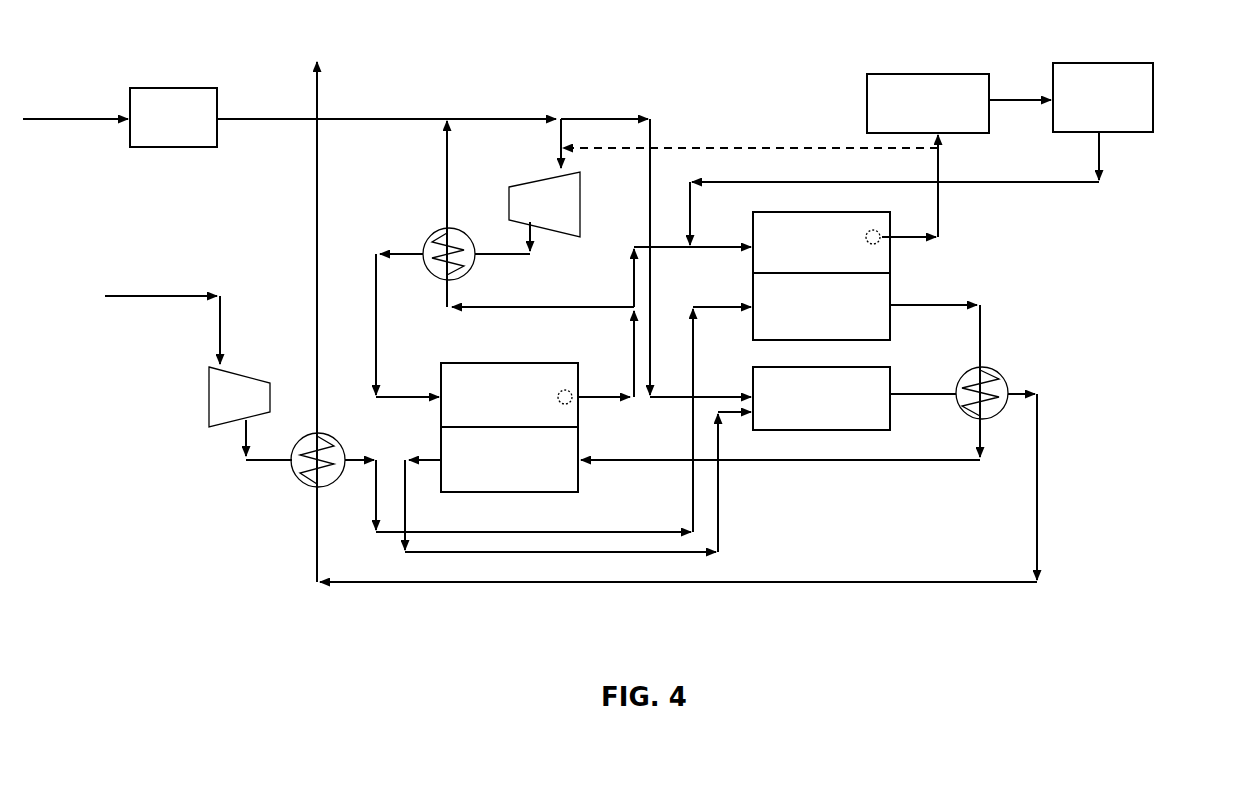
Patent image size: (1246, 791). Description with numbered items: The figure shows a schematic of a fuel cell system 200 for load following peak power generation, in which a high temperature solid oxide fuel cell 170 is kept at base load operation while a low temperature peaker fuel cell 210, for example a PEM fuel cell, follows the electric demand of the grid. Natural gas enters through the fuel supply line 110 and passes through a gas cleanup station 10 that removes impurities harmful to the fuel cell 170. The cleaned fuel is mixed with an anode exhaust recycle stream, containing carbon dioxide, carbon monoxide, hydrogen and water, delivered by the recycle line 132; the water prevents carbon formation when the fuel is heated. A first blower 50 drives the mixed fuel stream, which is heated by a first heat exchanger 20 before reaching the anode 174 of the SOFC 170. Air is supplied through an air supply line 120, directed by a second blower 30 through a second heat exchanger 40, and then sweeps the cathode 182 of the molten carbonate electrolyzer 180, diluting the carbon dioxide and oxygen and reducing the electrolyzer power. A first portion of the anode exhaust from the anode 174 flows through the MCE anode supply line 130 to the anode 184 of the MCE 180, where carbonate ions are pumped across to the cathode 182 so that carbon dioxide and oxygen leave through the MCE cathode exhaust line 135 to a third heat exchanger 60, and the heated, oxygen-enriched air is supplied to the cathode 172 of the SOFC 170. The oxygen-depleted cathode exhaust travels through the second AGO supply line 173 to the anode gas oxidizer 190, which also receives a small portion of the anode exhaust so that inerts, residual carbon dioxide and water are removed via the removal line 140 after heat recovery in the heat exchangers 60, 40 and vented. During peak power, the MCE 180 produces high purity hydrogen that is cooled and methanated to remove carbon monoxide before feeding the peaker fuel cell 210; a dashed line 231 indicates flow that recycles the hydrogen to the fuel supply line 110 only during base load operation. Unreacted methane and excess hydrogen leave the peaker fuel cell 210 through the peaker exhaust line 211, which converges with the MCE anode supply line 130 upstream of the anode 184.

The fuel cell system 200 is at (627, 80).
The fuel supply line 110 is at (67, 124).
The gas cleanup station 10 is at (174, 149).
The first heat exchanger 20 is at (432, 228).
The first blower 50 is at (526, 178).
The fuel bypass line 231 is at (648, 192).
The MCE anode supply line 130 is at (632, 262).
The recycle line 132 is at (556, 310).
The fuel cell 170 is at (455, 360).
The anode 174 is at (440, 384).
The cathode 172 is at (440, 437).
The air supply line 120 is at (134, 302).
The second blower 30 is at (208, 396).
The second heat exchanger 40 is at (296, 486).
The second AGO supply line 173 is at (720, 538).
The molten carbonate electrolyzer 180 is at (748, 280).
The anode 184 is at (752, 224).
The cathode 182 is at (892, 300).
The MCE cathode exhaust line 135 is at (984, 322).
The third heat exchanger 60 is at (1006, 372).
The anode gas oxidizer 190 is at (892, 430).
The removal line 140 is at (530, 586).
The low temperature peaker fuel cell 210 is at (1154, 92).
The peaker exhaust line 211 is at (1102, 172).